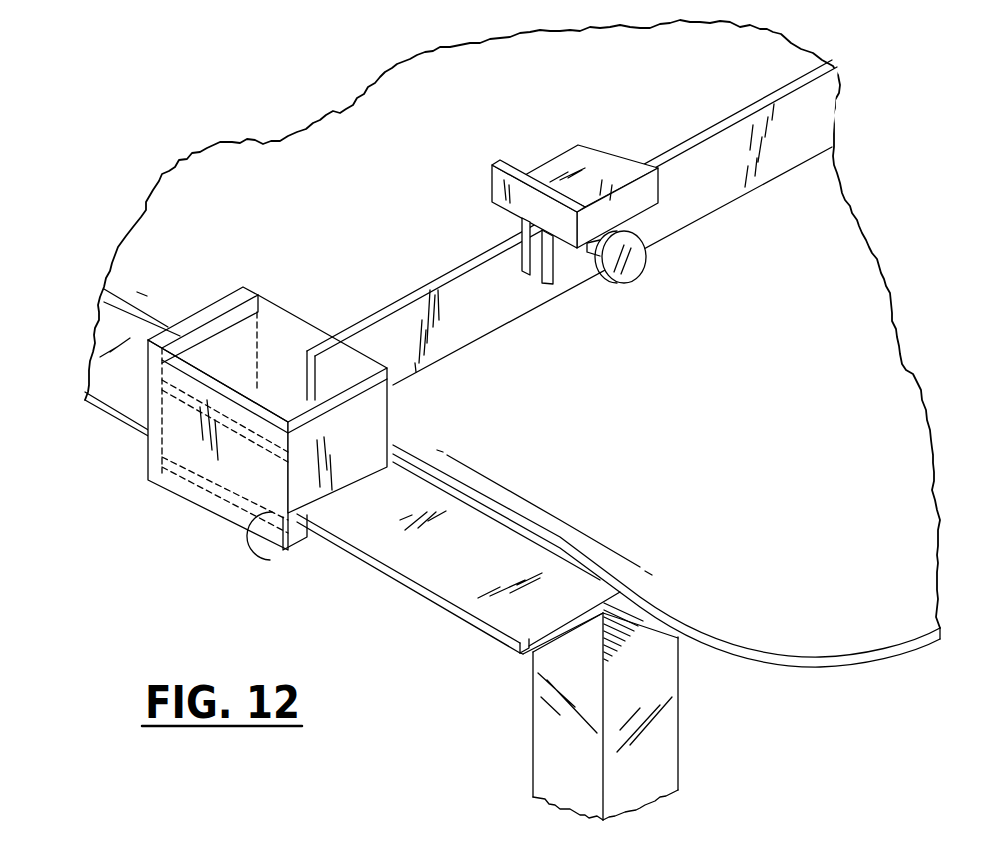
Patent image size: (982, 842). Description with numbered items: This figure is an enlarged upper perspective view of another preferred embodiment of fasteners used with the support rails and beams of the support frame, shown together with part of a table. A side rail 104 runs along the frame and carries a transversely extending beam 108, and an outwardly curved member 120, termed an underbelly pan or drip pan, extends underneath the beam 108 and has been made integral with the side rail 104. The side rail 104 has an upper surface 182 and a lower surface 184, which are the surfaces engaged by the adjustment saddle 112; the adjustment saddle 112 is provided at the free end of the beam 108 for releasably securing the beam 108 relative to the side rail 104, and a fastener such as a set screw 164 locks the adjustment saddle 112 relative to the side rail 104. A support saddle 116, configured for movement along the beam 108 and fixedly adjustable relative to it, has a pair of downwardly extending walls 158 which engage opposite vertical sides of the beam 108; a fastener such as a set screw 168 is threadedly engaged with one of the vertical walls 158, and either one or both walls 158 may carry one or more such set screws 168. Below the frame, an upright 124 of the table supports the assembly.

The side rail 104 is at (377, 568).
The beam 108 is at (473, 331).
The adjustment saddle 112 is at (150, 447).
The support saddle 116 is at (652, 200).
The outwardly curved member 120 is at (833, 661).
The upright 124 is at (668, 721).
The downwardly extending wall 158 is at (503, 209).
The set screw 164 is at (258, 548).
The set screw 168 is at (641, 282).
The upper surface 182 is at (460, 602).
The lower surface 184 is at (525, 662).